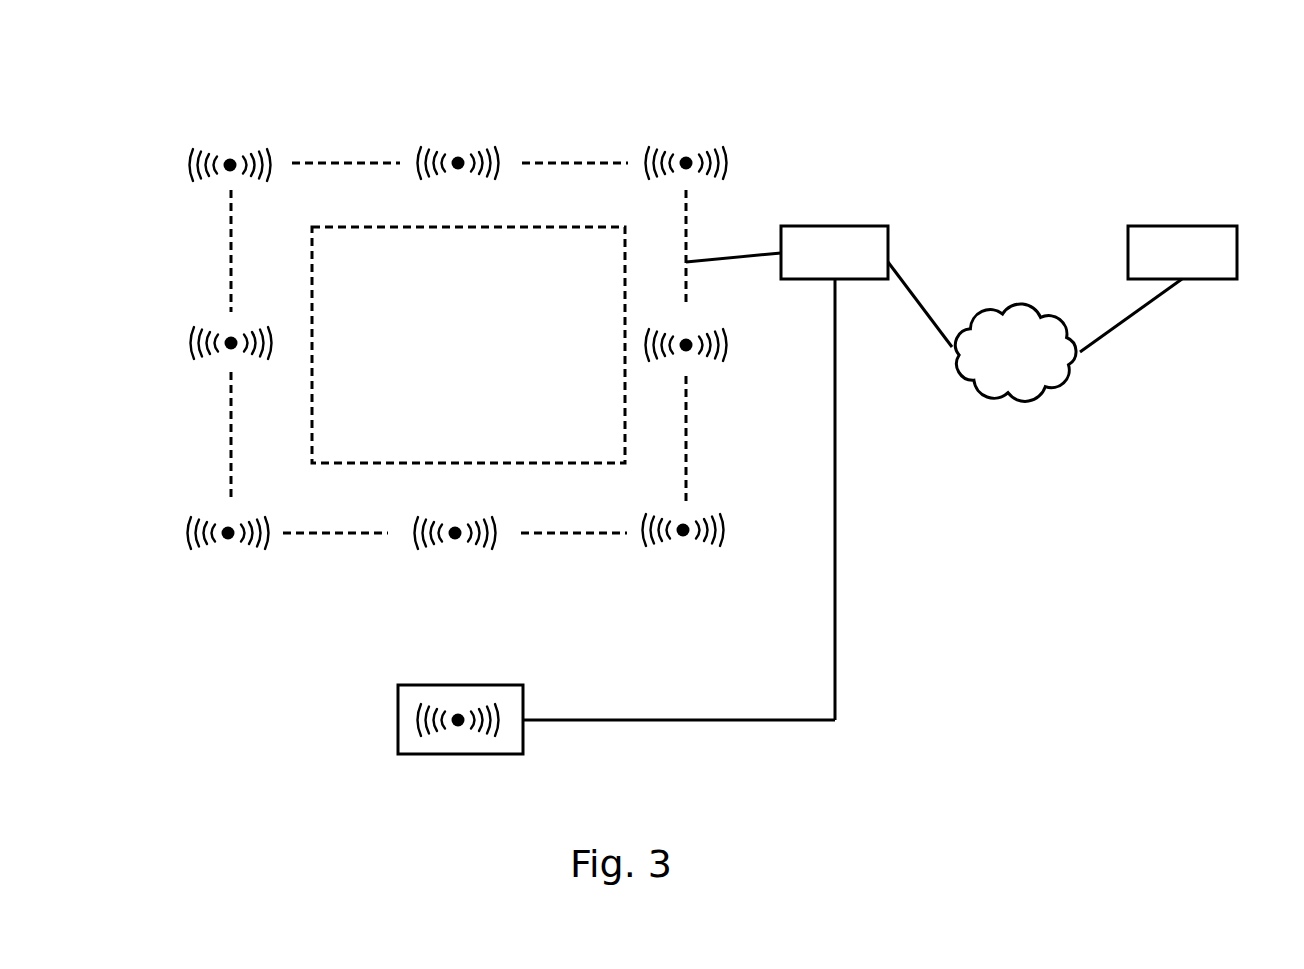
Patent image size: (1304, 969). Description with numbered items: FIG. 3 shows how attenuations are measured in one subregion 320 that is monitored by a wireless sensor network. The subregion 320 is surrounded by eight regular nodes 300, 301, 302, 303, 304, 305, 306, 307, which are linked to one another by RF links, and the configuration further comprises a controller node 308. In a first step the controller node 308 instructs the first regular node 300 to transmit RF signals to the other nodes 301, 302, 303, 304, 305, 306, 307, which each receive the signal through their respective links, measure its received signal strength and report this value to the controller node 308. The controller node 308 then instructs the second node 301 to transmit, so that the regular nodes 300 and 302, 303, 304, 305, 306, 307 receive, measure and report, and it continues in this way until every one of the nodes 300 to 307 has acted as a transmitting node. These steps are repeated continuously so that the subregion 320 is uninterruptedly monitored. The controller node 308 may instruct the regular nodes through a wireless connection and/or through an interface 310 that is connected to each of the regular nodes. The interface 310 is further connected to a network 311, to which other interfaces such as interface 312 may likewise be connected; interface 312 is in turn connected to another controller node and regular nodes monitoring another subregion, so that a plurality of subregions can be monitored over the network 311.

The first regular node 300 is at (232, 131).
The second regular node 301 is at (454, 130).
The regular node 302 is at (684, 128).
The regular node 303 is at (155, 345).
The regular node 304 is at (700, 366).
The regular node 305 is at (231, 572).
The regular node 306 is at (458, 572).
The regular node 307 is at (686, 570).
The controller node 308 is at (385, 720).
The interface 310 is at (834, 252).
The network 311 is at (1015, 352).
The interface 312 is at (1182, 252).
The subregion 320 is at (314, 411).